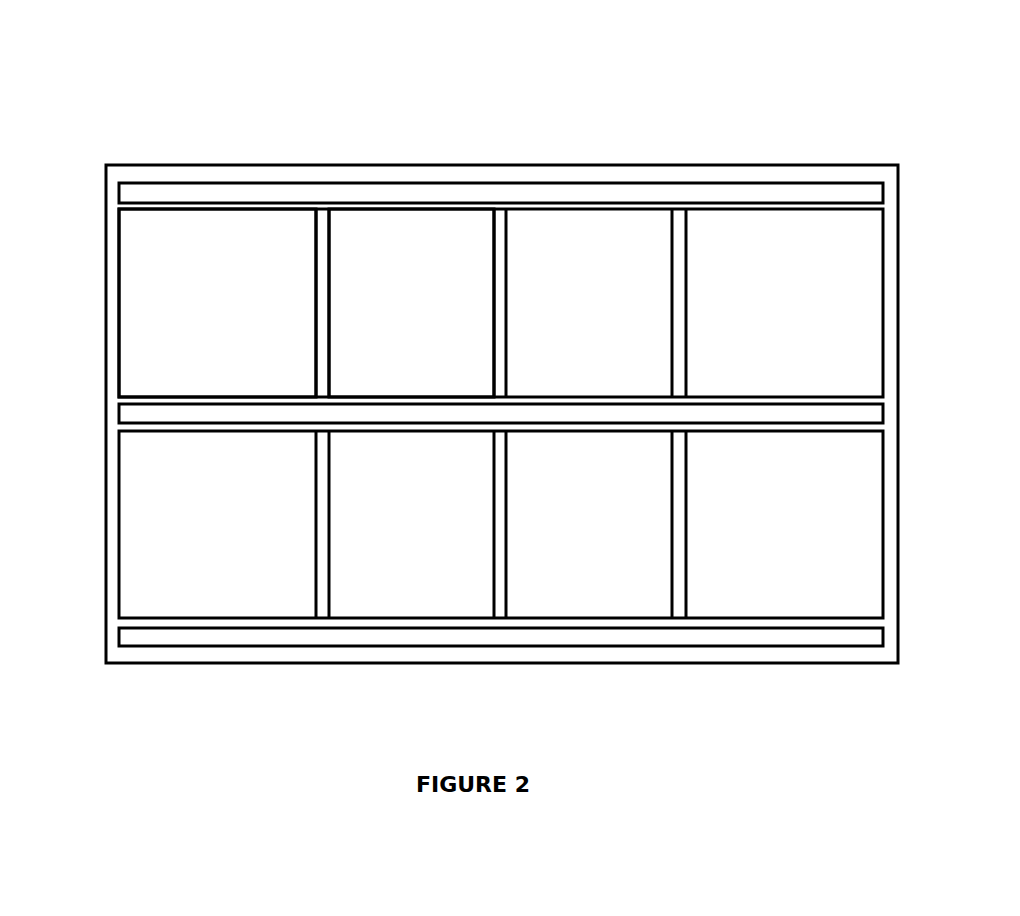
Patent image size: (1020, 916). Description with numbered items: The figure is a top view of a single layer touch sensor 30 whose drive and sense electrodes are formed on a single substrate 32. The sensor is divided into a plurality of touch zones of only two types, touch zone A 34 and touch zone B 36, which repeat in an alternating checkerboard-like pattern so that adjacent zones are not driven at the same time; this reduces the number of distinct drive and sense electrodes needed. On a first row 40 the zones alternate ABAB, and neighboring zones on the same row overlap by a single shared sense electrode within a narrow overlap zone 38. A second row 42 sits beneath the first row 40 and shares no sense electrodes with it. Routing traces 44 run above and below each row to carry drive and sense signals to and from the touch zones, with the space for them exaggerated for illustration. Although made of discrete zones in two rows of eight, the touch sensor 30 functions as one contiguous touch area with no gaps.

The touch sensor 30 is at (470, 381).
The substrate 32 is at (203, 152).
The touch zone A 34 is at (233, 257).
The touch zone B 36 is at (427, 247).
The overlap zone 38 is at (666, 375).
The first row 40 is at (463, 235).
The second row 42 is at (80, 529).
The routing traces 44 is at (382, 175).